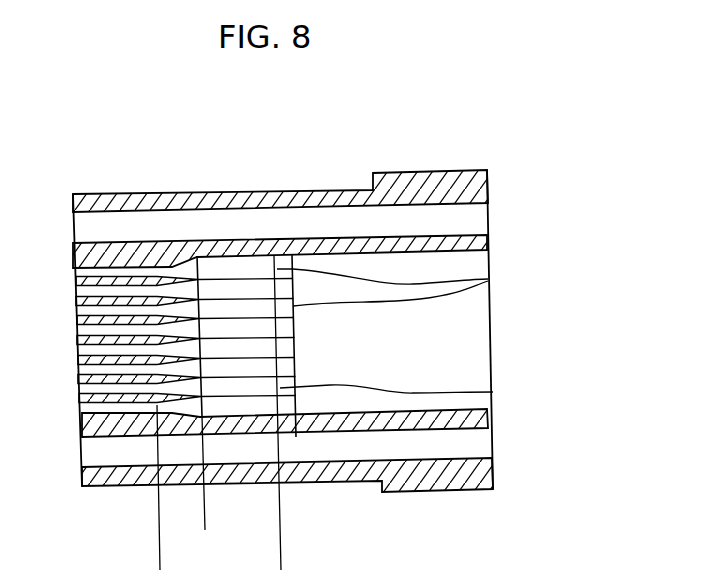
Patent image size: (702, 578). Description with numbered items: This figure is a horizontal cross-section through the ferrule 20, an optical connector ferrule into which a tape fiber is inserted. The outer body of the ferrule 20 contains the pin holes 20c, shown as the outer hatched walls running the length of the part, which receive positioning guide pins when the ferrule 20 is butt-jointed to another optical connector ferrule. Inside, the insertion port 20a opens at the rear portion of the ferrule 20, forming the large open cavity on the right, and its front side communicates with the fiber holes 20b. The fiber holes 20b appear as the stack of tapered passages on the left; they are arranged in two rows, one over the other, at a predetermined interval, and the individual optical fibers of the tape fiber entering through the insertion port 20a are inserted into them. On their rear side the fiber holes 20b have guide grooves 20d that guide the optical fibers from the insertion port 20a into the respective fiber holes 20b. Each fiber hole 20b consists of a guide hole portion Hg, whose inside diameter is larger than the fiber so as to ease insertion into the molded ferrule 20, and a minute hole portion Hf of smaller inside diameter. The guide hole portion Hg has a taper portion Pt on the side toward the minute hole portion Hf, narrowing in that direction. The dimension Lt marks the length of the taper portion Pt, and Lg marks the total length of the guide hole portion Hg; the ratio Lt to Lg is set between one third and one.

The ferrule 20 is at (343, 190).
The insertion port 20a is at (460, 333).
The fiber holes 20b is at (262, 150).
The pin holes 20c is at (462, 233).
The guide grooves 20d is at (488, 279).
The minute hole portion Hf is at (110, 268).
The taper portion Pt is at (173, 265).
The guide hole portion Hg is at (237, 268).
The length of the taper portion Lt is at (203, 523).
The total length of the guide hole portion Lg is at (280, 562).